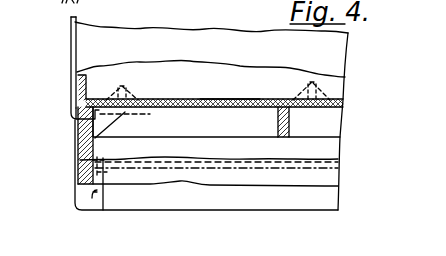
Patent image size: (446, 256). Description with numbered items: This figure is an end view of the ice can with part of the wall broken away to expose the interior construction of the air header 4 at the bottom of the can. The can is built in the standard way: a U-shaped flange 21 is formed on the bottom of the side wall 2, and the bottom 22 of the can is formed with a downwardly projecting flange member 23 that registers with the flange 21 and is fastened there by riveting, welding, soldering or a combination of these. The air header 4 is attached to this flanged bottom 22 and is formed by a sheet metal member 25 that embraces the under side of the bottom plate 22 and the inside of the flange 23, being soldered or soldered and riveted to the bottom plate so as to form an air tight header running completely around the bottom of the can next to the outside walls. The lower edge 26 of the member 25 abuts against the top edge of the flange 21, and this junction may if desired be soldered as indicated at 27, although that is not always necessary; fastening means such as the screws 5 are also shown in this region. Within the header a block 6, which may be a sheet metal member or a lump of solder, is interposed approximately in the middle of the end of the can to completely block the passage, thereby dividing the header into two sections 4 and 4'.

The wall panel 2 is at (72, 44).
The air header 4 is at (60, 98).
The header section 4' is at (228, 122).
The screw 5 is at (128, 85).
The block 6 is at (278, 122).
The U-shaped flange 21 is at (78, 209).
The bottom 22 is at (161, 100).
The flange member 23 is at (78, 147).
The sheet metal member 25 is at (223, 100).
The lower edge 26 is at (103, 145).
The soldered junction 27 is at (107, 164).